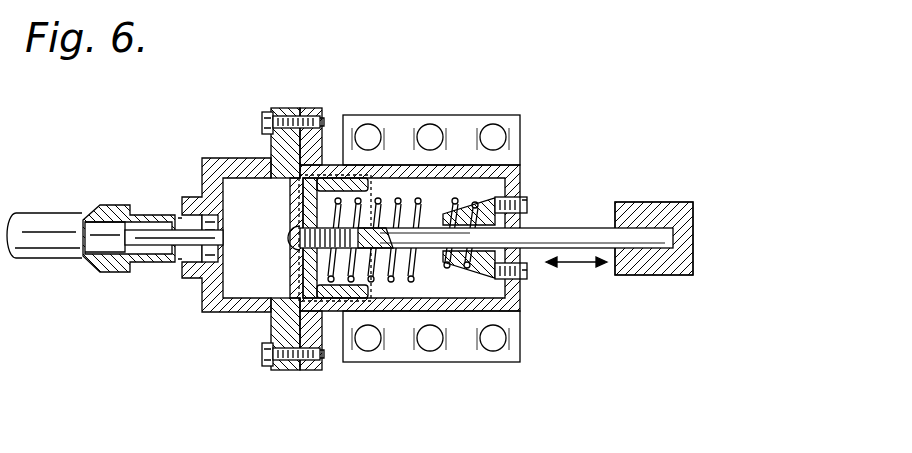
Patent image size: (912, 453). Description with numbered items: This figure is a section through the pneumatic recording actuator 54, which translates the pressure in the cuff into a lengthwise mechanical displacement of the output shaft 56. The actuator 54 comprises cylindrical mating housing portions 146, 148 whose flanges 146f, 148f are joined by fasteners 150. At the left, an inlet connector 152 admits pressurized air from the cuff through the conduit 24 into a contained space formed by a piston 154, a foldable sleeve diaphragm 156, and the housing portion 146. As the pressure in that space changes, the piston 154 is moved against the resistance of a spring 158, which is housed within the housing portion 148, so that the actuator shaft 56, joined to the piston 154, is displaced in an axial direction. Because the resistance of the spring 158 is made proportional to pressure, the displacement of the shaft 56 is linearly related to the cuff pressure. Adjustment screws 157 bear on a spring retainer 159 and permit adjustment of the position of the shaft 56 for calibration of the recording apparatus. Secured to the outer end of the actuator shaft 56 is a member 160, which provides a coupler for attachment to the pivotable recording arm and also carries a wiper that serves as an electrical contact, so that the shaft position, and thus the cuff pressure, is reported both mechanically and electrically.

The conduit 24 is at (40, 213).
The pneumatic recording actuator 54 is at (270, 86).
The output shaft 56 is at (586, 228).
The housing portion 146 is at (222, 313).
The flange 146f is at (288, 108).
The housing portion 148 is at (405, 266).
The flange 148f is at (306, 108).
The fasteners 150 is at (262, 121).
The inlet connector 152 is at (110, 267).
The piston 154 is at (395, 190).
The foldable sleeve diaphragm 156 is at (328, 178).
The adjustment screws 157 is at (528, 200).
The spring 158 is at (451, 265).
The spring retainer 159 is at (478, 200).
The member 160 is at (697, 225).